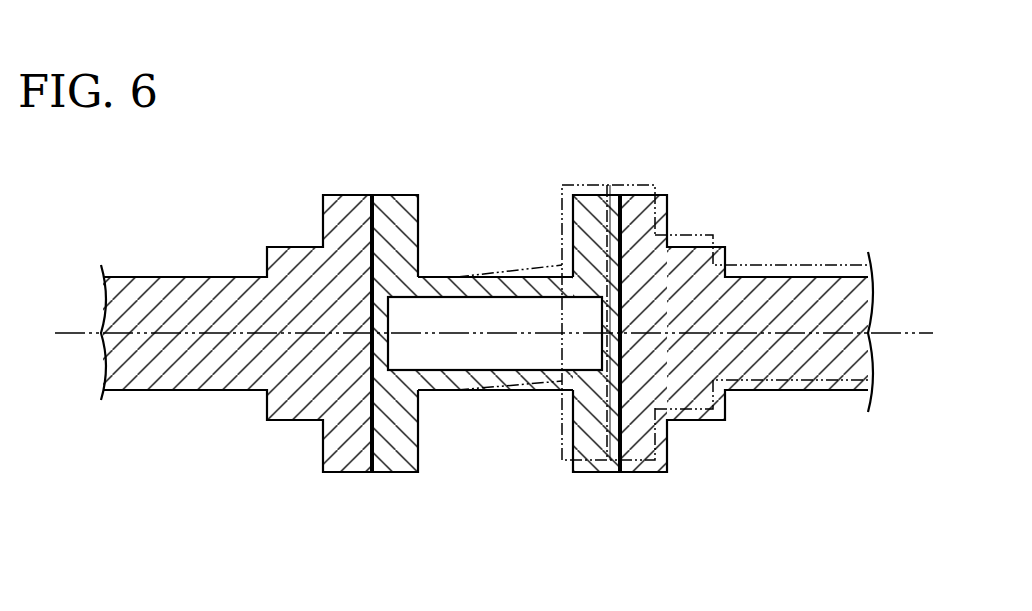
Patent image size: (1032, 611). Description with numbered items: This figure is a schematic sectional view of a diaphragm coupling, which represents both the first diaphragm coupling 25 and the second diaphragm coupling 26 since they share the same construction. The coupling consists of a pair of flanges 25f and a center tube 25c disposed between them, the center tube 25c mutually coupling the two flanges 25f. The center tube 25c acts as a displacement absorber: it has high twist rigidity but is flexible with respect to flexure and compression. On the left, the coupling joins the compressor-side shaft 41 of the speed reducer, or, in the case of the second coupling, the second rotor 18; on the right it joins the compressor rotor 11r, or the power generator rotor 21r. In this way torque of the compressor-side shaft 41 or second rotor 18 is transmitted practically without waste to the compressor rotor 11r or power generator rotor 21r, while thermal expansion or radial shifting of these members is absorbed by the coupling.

The compressor-side shaft 41 is at (236, 324).
The second rotor 18 is at (178, 277).
The first diaphragm coupling 25 is at (620, 349).
The second diaphragm coupling 26 is at (620, 349).
The center tube 25c is at (505, 390).
The flanges 25f is at (397, 472).
The compressor rotor 11r is at (746, 344).
The power generator rotor 21r is at (793, 390).